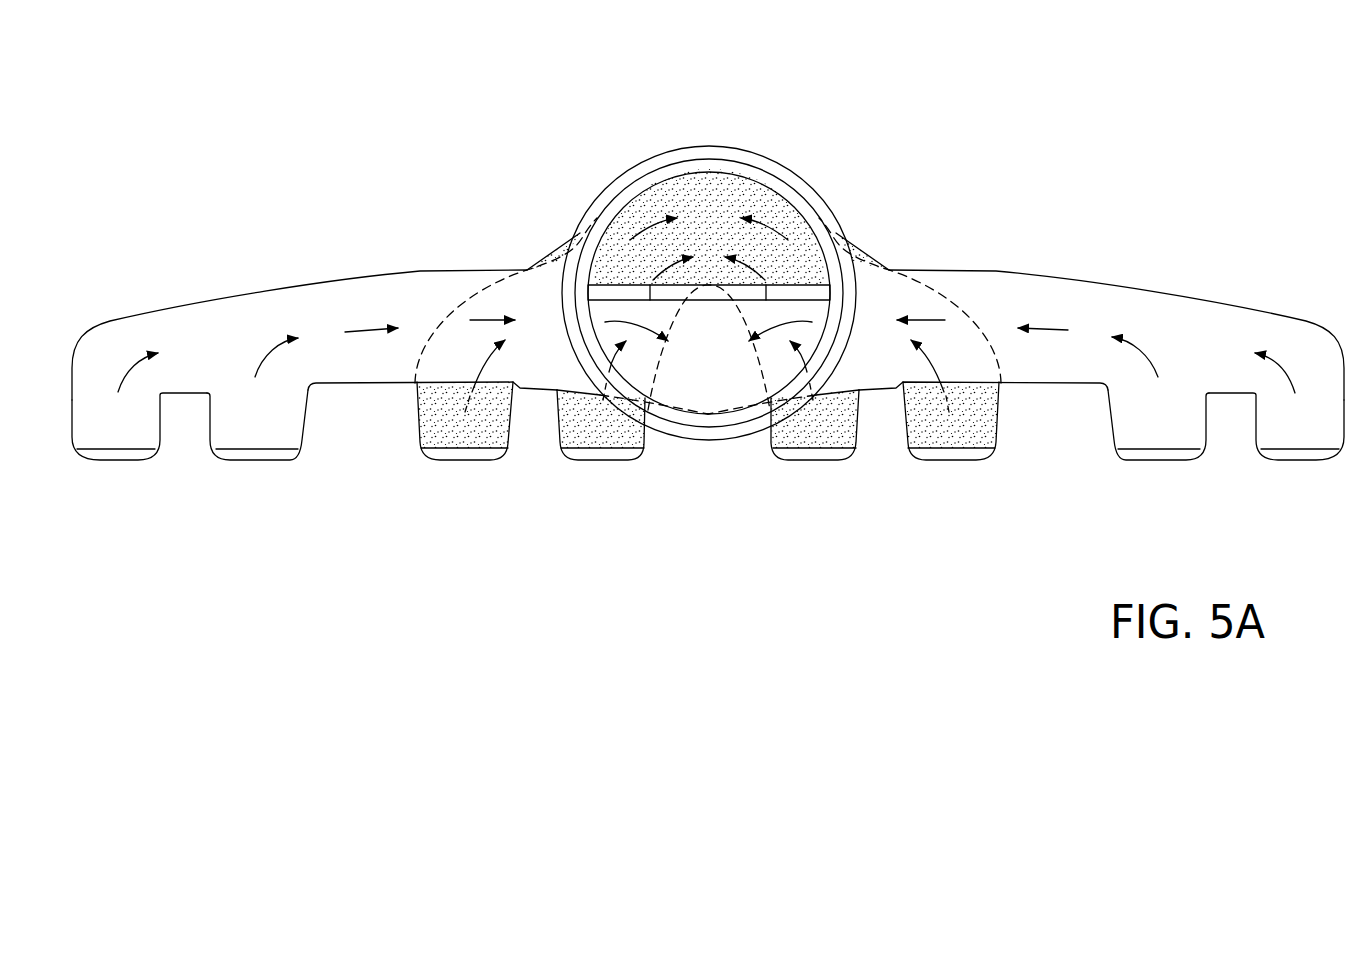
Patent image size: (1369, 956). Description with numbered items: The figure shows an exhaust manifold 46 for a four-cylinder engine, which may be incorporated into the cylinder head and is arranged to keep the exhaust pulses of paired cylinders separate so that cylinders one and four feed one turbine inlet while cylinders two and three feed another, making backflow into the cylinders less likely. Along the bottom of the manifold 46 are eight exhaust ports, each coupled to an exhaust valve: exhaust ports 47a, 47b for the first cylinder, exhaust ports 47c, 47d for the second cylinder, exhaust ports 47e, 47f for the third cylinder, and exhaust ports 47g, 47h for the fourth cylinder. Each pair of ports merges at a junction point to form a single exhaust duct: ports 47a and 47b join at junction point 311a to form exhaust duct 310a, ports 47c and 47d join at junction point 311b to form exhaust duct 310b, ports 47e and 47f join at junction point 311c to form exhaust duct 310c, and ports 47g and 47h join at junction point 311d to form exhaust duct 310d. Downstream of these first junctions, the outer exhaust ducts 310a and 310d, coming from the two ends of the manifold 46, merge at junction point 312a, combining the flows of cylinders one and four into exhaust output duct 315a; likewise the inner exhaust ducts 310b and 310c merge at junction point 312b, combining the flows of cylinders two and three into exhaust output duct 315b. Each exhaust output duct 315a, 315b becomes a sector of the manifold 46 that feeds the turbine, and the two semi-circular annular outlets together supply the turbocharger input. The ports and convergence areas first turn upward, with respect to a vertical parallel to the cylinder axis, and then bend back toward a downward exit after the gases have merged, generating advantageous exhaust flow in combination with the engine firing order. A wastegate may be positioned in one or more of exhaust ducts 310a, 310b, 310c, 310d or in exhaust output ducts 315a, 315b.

The exhaust manifold 46 is at (392, 182).
The exhaust port 47a is at (97, 428).
The exhaust port 47b is at (236, 428).
The exhaust port 47c is at (462, 438).
The exhaust port 47d is at (598, 440).
The exhaust port 47e is at (806, 440).
The exhaust port 47f is at (947, 438).
The exhaust port 47g is at (1131, 435).
The exhaust port 47h is at (1269, 435).
The exhaust duct 310a is at (376, 308).
The exhaust duct 310b is at (550, 287).
The exhaust duct 310c is at (873, 288).
The exhaust duct 310d is at (1021, 313).
The junction point 311a is at (188, 382).
The junction point 311b is at (525, 390).
The junction point 311c is at (878, 390).
The junction point 311d is at (1222, 392).
The junction point 312a is at (693, 383).
The junction point 312b is at (703, 193).
The exhaust output duct 315a is at (681, 343).
The exhaust output duct 315b is at (717, 235).